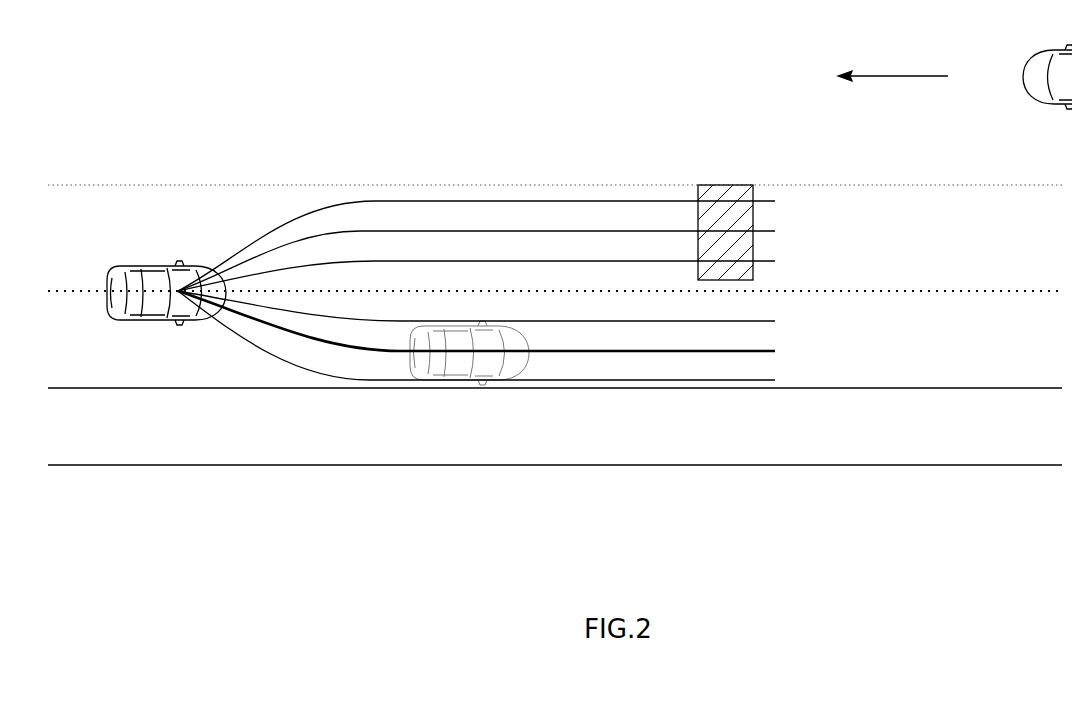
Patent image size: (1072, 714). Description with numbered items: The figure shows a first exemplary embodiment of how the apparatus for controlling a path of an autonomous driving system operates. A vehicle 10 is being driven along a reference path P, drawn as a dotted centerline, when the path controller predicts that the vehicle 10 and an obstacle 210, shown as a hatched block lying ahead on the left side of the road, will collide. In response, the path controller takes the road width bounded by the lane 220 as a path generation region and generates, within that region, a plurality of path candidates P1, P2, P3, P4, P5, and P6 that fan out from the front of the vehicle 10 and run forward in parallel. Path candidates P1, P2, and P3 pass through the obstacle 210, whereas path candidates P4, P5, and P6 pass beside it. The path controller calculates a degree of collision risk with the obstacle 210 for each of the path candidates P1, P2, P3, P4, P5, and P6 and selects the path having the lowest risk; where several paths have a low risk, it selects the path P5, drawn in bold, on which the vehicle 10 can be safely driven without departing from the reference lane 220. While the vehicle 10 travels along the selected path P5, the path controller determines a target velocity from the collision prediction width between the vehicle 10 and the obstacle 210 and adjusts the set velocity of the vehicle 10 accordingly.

The vehicle 10 is at (157, 266).
The obstacle 210 is at (727, 185).
The lane 220 is at (903, 389).
The reference path P is at (555, 291).
The path candidate P1 is at (493, 240).
The path candidate P2 is at (493, 255).
The path candidate P3 is at (493, 270).
The path candidate P4 is at (493, 312).
The selected path P5 is at (493, 327).
The path candidate P6 is at (493, 341).